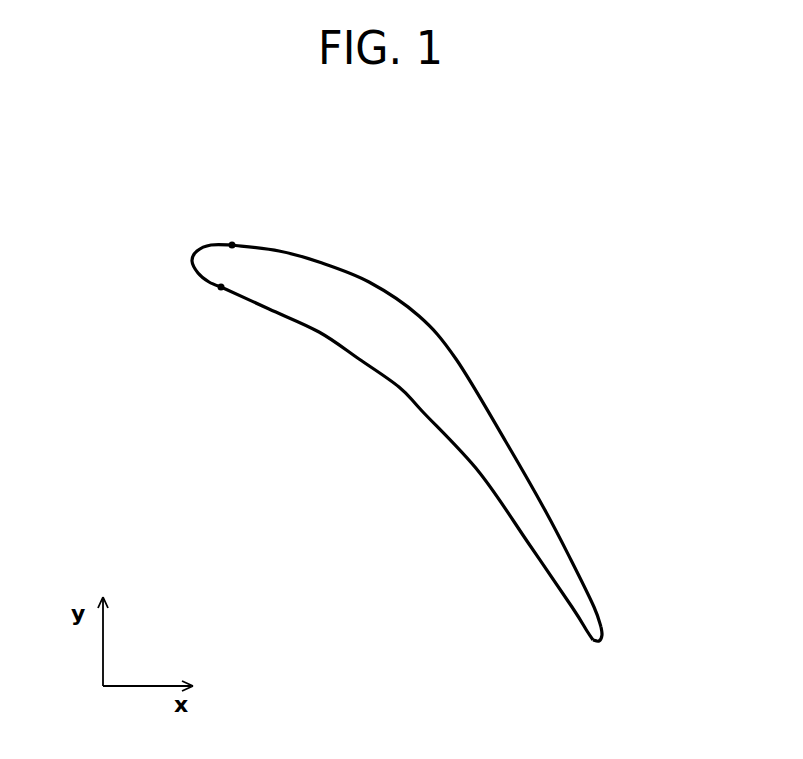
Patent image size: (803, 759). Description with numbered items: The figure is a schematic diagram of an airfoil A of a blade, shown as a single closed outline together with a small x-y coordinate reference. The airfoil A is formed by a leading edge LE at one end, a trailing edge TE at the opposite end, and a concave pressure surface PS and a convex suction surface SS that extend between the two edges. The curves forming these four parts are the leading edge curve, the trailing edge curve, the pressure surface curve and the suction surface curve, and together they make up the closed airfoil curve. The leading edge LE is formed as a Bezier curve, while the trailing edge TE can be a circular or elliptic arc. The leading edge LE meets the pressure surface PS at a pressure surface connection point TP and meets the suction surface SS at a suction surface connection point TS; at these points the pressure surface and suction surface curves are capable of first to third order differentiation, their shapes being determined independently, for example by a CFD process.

The airfoil A is at (484, 251).
The suction surface SS is at (370, 282).
The pressure surface PS is at (423, 412).
The leading edge LE is at (193, 256).
The trailing edge TE is at (600, 642).
The suction surface connection point TS is at (233, 246).
The pressure surface connection point TP is at (222, 288).